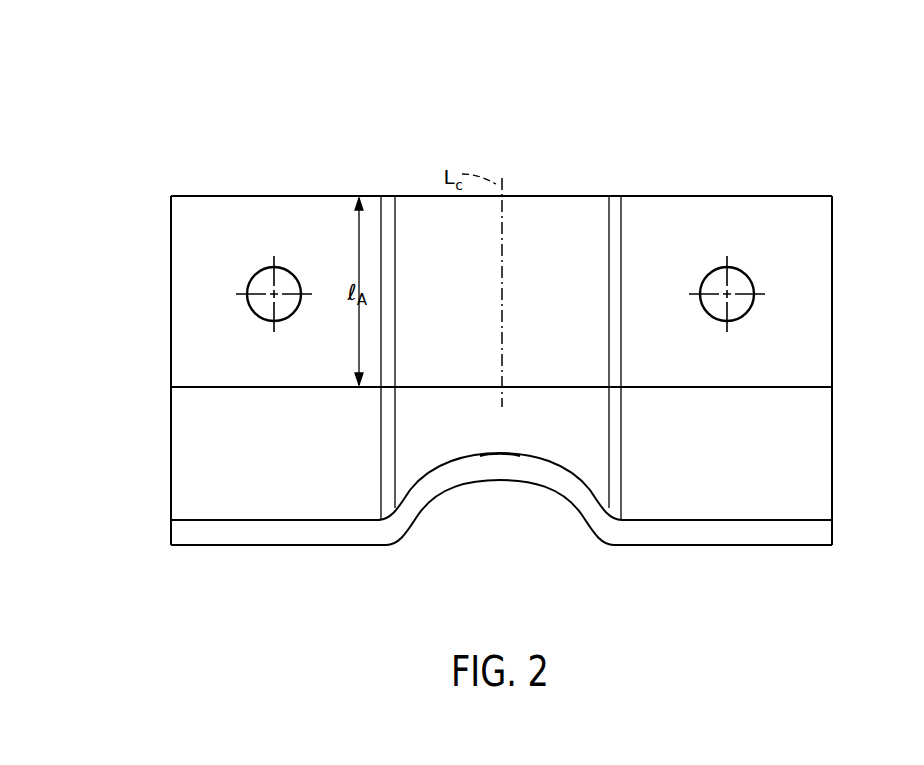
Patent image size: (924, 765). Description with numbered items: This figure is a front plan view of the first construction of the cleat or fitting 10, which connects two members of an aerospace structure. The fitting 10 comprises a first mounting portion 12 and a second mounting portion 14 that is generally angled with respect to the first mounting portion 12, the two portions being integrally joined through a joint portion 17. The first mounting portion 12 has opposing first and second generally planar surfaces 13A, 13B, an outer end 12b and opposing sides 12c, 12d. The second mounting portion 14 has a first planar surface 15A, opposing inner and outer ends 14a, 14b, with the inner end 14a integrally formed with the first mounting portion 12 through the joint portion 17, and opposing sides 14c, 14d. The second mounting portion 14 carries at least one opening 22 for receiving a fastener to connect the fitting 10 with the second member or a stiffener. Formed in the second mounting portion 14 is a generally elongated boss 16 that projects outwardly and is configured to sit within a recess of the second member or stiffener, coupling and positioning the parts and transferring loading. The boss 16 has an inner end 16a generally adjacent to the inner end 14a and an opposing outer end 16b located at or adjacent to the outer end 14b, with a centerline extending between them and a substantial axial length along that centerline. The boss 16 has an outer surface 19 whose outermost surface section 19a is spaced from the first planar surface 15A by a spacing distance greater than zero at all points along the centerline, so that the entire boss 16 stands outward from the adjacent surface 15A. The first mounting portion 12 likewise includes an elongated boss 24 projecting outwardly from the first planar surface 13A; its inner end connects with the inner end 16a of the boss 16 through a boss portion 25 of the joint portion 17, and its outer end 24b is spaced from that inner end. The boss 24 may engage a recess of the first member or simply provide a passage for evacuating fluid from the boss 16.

The fitting 10 is at (224, 128).
The first mounting portion 12 is at (272, 548).
The outer end of first mounting portion 12b is at (657, 545).
The side of first mounting portion 12c is at (833, 530).
The side of first mounting portion 12d is at (170, 535).
The first planar surface of first mounting portion 13A is at (696, 520).
The second planar surface of first mounting portion 13B is at (732, 548).
The second mounting portion 14 is at (170, 238).
The inner end of second mounting portion 14a is at (793, 387).
The outer end of second mounting portion 14b is at (768, 195).
The side of second mounting portion 14c is at (833, 228).
The side of second mounting portion 14d is at (170, 298).
The first planar surface of second mounting portion 15A is at (818, 272).
The elongated boss 16 is at (585, 220).
The inner end of boss 16a is at (557, 387).
The outer end of boss 16b is at (558, 195).
The joint portion 17 is at (200, 443).
The outer surface of boss 19 is at (423, 228).
The outermost surface section 19a is at (508, 294).
The opening 22 is at (266, 272).
The first mounting portion boss 24 is at (450, 455).
The outer end of first mounting portion boss 24b is at (502, 468).
The boss portion of joint 25 is at (597, 445).